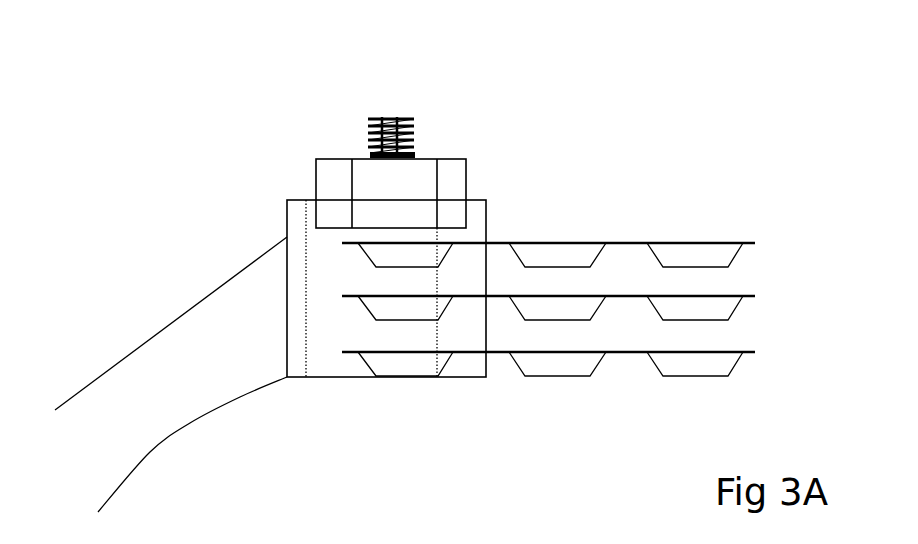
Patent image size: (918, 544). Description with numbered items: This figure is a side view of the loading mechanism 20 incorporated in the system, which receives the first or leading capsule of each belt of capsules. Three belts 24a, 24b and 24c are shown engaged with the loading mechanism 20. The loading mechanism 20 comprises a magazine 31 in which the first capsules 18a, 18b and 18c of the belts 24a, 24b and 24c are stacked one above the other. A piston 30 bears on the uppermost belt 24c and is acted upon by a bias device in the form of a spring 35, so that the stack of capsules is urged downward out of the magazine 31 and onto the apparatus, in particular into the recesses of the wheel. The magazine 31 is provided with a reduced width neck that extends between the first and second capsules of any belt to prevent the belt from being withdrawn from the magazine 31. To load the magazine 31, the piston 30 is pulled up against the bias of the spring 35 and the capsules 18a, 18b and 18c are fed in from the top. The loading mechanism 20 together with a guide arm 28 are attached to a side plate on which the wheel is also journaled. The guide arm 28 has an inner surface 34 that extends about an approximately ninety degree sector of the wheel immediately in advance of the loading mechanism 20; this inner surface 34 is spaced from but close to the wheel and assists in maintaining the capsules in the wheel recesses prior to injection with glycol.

The first capsule 18a is at (400, 365).
The first capsule 18b is at (382, 306).
The first capsule 18c is at (388, 252).
The loading mechanism 20 is at (528, 196).
The belt 24a is at (755, 351).
The belt 24b is at (755, 296).
The belt 24c is at (755, 242).
The guide arm 28 is at (165, 372).
The piston 30 is at (453, 177).
The magazine 31 is at (496, 382).
The inner surface 34 is at (190, 425).
The spring 35 is at (417, 143).